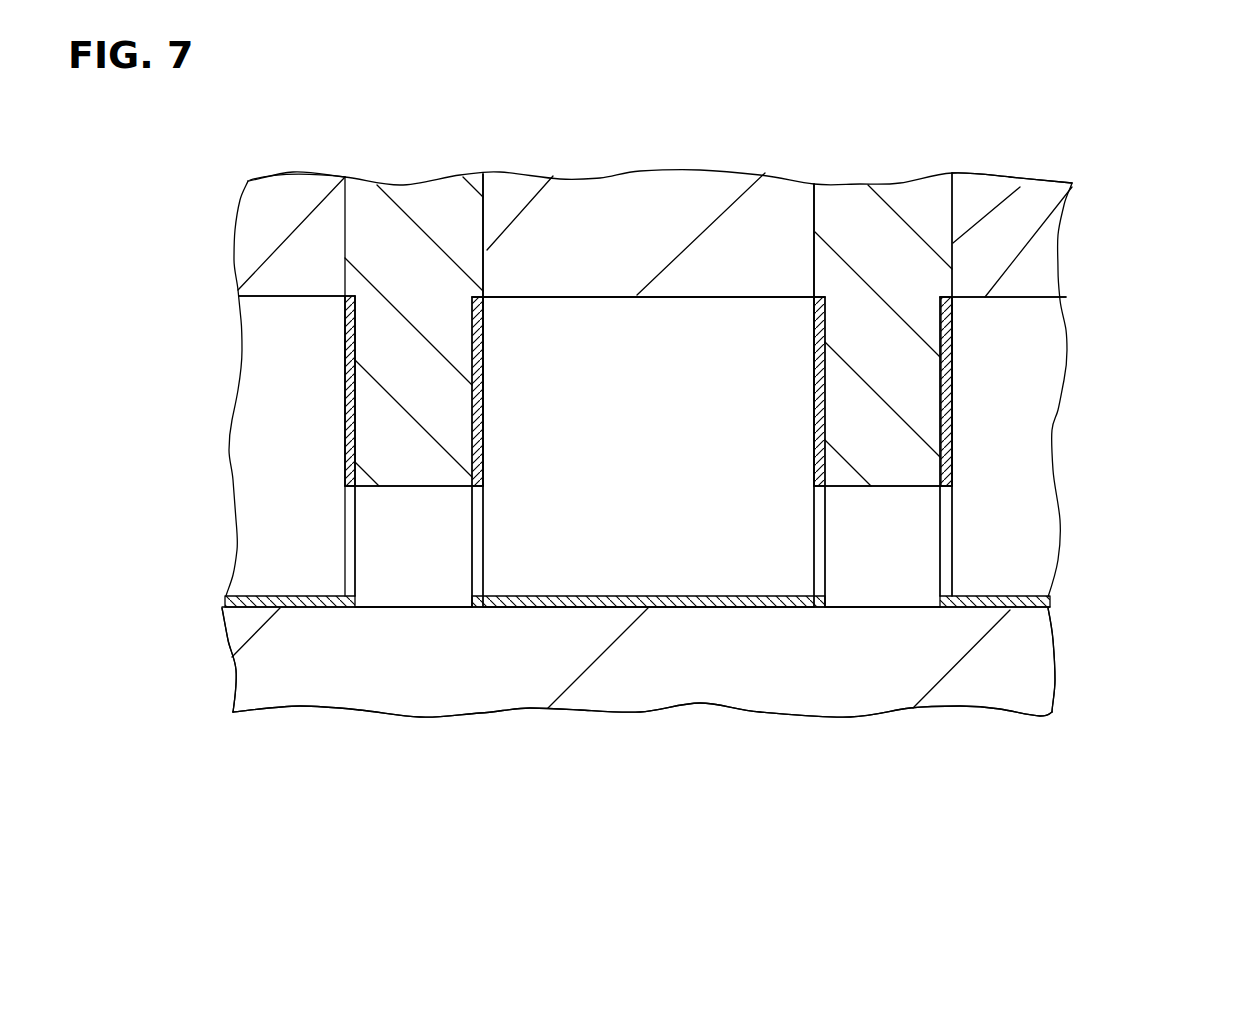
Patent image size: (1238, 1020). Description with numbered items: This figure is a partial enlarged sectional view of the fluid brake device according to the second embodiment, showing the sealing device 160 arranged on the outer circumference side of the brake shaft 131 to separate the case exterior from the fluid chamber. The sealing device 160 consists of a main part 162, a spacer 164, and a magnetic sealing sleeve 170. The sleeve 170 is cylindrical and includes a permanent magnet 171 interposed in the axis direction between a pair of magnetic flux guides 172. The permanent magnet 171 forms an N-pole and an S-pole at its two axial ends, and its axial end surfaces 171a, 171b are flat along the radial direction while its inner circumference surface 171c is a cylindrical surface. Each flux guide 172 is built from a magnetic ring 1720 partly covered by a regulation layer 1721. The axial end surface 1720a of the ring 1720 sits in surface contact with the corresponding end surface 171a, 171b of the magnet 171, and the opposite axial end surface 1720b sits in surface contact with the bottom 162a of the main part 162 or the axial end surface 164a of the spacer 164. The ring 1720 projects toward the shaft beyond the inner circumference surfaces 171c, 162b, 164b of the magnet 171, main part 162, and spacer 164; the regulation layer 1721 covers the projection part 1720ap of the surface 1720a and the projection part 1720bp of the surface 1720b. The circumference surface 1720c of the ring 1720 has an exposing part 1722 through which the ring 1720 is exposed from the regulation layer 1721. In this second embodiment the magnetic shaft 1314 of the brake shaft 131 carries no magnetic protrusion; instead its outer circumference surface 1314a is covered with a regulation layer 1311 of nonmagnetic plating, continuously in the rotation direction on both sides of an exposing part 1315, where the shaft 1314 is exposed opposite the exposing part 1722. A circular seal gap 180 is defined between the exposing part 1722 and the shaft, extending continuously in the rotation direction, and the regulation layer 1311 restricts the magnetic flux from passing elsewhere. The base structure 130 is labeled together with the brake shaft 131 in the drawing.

The sealing device 160 is at (248, 181).
The main part 162 is at (294, 195).
The bottom of the main part 162a is at (350, 270).
The inner circumference surface of the main part 162b is at (287, 296).
The spacer 164 is at (1035, 195).
The axial end surface of the spacer 164a is at (1005, 228).
The inner circumference surface of the spacer 164b is at (1000, 300).
The magnetic sealing sleeve 170 is at (952, 175).
The permanent magnet 171 is at (696, 187).
The axial end surface of the permanent magnet 171a is at (483, 262).
The axial end surface of the permanent magnet 171b is at (814, 258).
The inner circumference surface of the permanent magnet 171c is at (612, 306).
The magnetic flux guide 172 is at (373, 198).
The magnetic ring 1720 is at (345, 333).
The axial end surface of the magnetic ring 1720a is at (485, 283).
The projection part of the axial end surface 1720ap is at (814, 385).
The axial end surface of the magnetic ring 1720b is at (340, 292).
The projection part of the axial end surface 1720bp is at (345, 350).
The circumference surface of the magnetic ring 1720c is at (822, 487).
The regulation layer 1721 is at (345, 362).
The exposing part of the flux guide 1722 is at (406, 487).
The seal gap 180 is at (390, 531).
The base 130 is at (1056, 662).
The brake shaft 131 is at (1132, 660).
The regulation layer 1311 is at (290, 607).
The magnetic shaft 1314 is at (653, 675).
The outer circumference surface of the magnetic shaft 1314a is at (251, 597).
The exposing part of the magnetic shaft 1315 is at (419, 604).